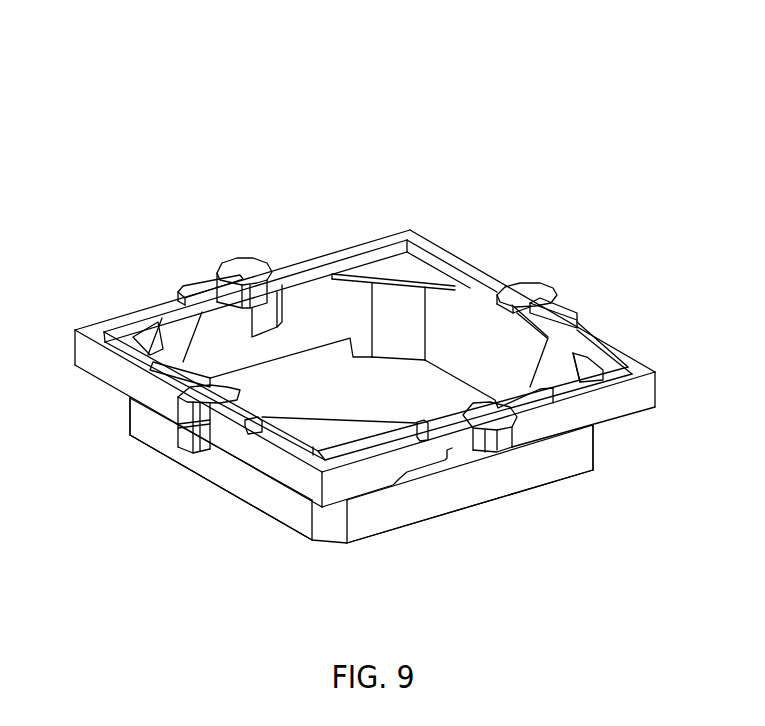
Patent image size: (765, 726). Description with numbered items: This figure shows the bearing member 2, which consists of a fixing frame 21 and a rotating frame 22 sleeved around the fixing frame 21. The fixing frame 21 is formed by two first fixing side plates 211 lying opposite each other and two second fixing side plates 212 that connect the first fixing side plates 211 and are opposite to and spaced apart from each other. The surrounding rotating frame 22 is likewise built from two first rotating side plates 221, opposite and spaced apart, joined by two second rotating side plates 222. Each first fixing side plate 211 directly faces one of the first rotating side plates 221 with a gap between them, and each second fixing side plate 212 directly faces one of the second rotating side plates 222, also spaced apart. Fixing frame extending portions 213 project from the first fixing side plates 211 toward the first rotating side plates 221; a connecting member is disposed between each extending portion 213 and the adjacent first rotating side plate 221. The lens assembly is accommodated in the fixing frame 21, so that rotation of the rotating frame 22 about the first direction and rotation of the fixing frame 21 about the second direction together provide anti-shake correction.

The bearing member 2 is at (374, 310).
The fixing frame 21 is at (374, 393).
The first fixing side plates 211 is at (237, 478).
The second fixing side plates 212 is at (318, 295).
The rotating frame 22 is at (374, 313).
The first rotating side plates 221 is at (115, 370).
The second rotating side plates 222 is at (158, 312).
The fixing frame extending portions 213 is at (540, 287).